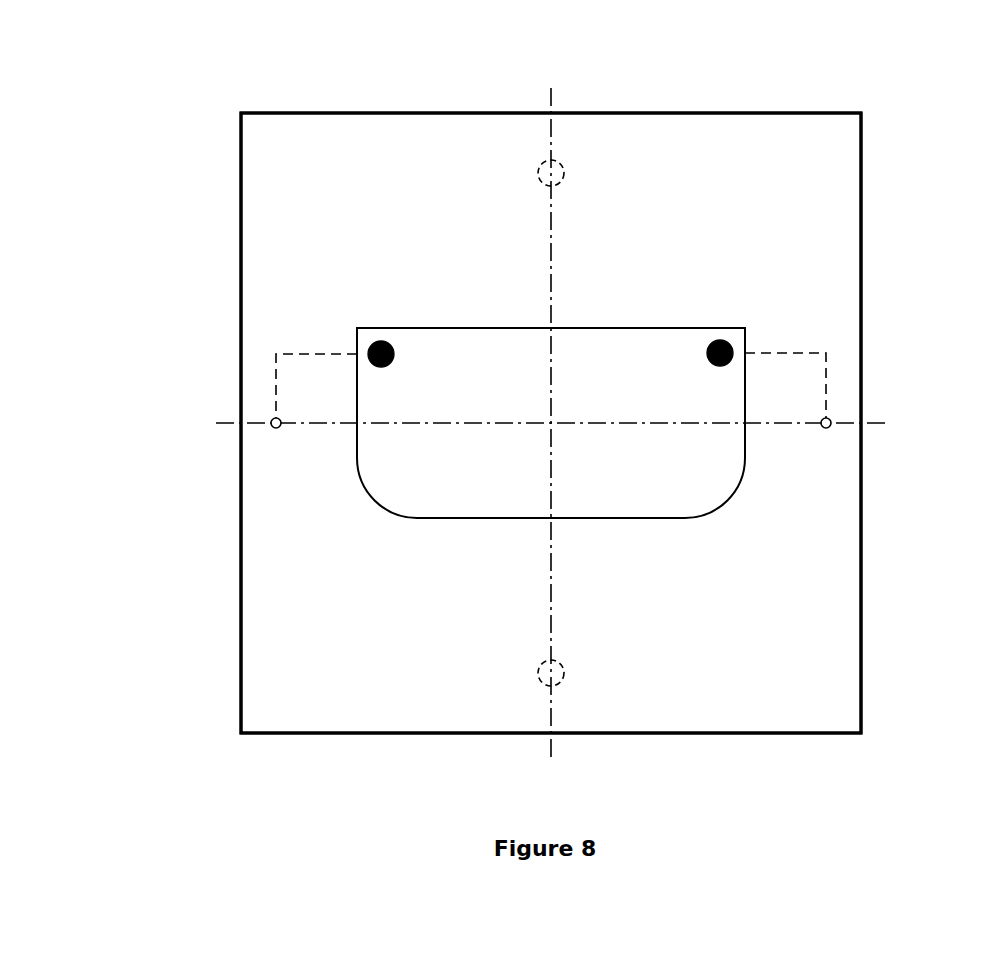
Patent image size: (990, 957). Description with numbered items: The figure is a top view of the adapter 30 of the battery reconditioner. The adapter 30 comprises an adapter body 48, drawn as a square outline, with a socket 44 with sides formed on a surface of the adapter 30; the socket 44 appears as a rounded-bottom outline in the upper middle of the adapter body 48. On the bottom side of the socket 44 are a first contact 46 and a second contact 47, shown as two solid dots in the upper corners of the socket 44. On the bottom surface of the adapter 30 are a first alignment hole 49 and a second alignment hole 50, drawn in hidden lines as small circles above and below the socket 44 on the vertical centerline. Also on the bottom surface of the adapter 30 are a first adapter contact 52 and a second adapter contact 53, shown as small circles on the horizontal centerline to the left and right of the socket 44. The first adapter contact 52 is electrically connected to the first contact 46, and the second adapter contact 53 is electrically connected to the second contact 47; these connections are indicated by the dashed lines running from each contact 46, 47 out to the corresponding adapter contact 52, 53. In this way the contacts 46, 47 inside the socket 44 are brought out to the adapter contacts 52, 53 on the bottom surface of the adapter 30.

The adapter 30 is at (303, 80).
The socket 44 is at (705, 507).
The first contact 46 is at (370, 350).
The second contact 47 is at (733, 345).
The adapter body 48 is at (815, 703).
The first alignment hole 49 is at (563, 166).
The second alignment hole 50 is at (563, 677).
The first adapter contact 52 is at (274, 428).
The second adapter contact 53 is at (830, 417).